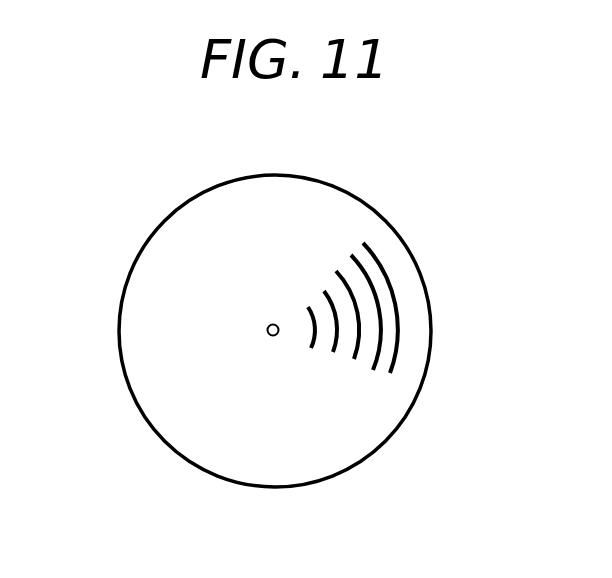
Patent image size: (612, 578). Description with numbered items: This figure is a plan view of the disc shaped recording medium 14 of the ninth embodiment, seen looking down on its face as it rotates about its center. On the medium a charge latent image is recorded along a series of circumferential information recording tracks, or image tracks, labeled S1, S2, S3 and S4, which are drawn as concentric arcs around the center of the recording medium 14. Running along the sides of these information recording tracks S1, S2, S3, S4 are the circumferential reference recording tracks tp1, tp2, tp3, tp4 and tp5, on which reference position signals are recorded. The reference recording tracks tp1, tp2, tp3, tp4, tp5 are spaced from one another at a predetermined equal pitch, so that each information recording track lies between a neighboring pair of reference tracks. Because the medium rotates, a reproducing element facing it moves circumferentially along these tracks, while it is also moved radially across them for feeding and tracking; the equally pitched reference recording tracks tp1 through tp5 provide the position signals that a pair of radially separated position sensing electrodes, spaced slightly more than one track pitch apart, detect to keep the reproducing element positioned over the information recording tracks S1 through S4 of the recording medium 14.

The disc shaped recording medium 14 is at (172, 403).
The reference recording track tp1 is at (388, 275).
The reference recording track tp2 is at (352, 256).
The reference recording track tp3 is at (350, 355).
The reference recording track tp4 is at (333, 351).
The reference recording track tp5 is at (311, 316).
The information recording track S1 is at (387, 380).
The information recording track S2 is at (362, 366).
The information recording track S3 is at (330, 283).
The information recording track S4 is at (315, 304).